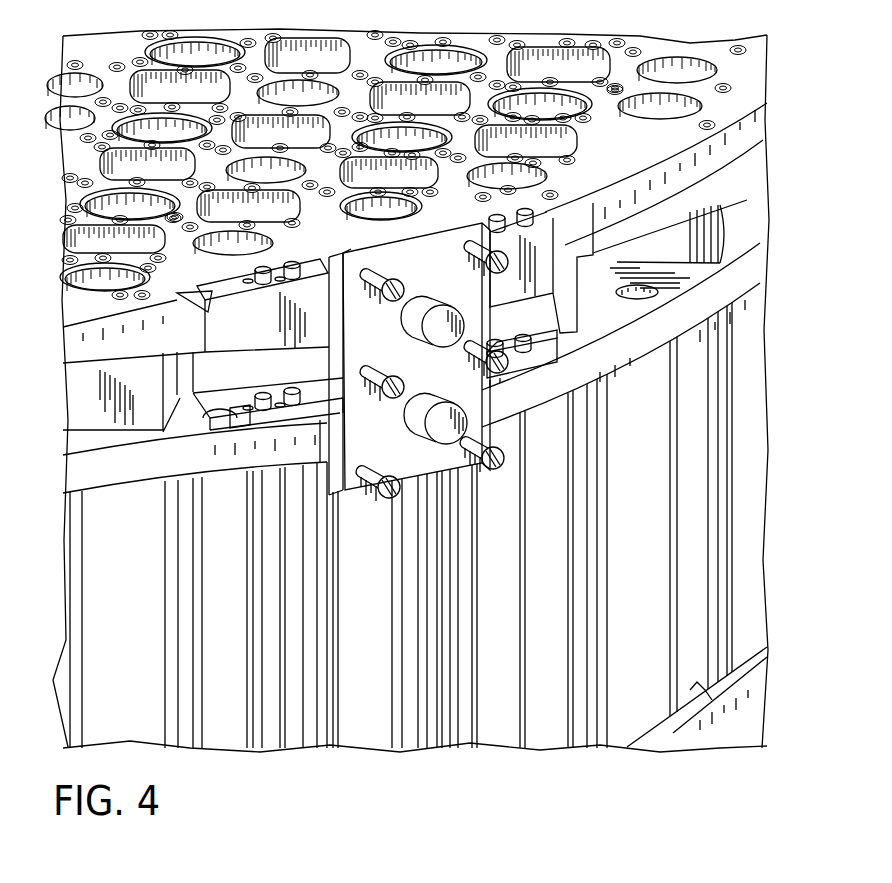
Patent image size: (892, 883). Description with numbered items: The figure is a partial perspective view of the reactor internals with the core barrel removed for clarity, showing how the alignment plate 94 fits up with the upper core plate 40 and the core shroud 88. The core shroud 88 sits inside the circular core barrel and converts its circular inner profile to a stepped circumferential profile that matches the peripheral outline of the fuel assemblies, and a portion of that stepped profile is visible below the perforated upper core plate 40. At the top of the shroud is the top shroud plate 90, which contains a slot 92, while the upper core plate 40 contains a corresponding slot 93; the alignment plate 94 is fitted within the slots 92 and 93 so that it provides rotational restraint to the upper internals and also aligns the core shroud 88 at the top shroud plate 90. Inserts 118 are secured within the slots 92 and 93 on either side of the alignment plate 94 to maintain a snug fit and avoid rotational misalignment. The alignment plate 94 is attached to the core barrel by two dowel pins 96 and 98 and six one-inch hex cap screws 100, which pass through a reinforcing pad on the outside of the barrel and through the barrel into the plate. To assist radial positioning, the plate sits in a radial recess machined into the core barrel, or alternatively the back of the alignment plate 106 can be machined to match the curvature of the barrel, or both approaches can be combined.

The upper core plate 40 is at (580, 196).
The core shroud 88 is at (512, 661).
The top shroud plate 90 is at (543, 400).
The slot 92 is at (327, 438).
The slot 93 is at (480, 224).
The alignment plate 94 is at (330, 502).
The dowel pin 96 is at (432, 300).
The dowel pin 98 is at (408, 425).
The hex cap screws 100 is at (503, 468).
The back of the alignment plate 106 is at (445, 386).
The inserts 118 is at (329, 260).